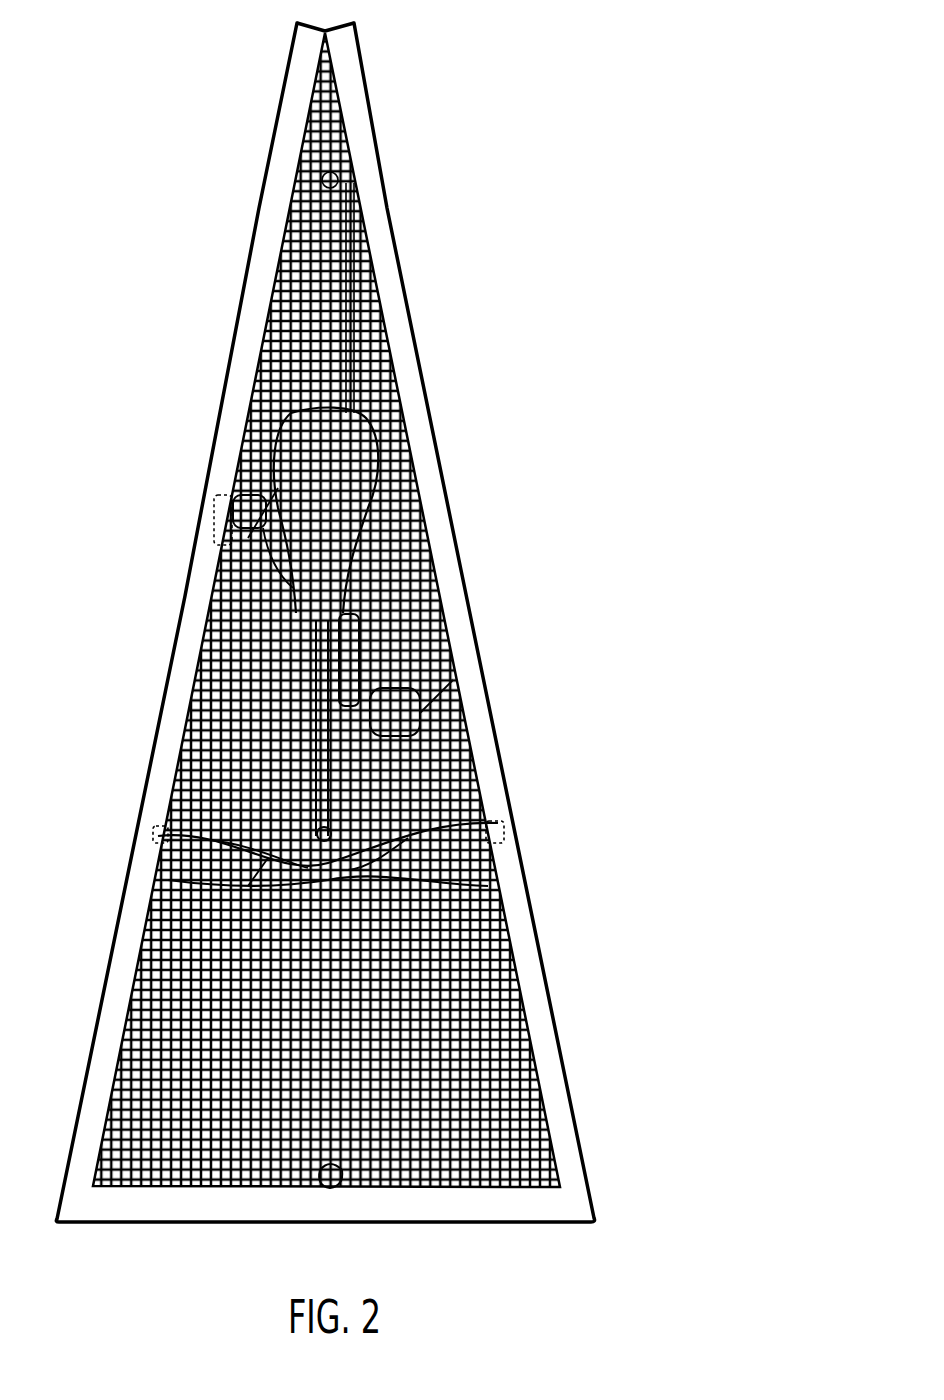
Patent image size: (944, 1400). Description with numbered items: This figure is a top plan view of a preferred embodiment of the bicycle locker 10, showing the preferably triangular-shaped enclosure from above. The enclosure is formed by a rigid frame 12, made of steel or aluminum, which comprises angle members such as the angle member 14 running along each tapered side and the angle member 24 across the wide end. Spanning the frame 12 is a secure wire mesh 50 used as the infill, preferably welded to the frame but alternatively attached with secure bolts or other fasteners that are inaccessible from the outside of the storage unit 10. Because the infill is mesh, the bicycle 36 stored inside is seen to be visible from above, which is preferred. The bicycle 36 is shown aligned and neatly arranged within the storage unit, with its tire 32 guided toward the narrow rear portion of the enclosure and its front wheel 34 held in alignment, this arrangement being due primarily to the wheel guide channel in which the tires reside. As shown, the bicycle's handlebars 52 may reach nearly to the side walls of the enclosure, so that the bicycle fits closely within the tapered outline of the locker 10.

The bicycle locker 10 is at (355, 664).
The rigid frame 12 is at (355, 664).
The angle member 14 is at (182, 588).
The angle member 24 is at (512, 1205).
The tire 32 is at (342, 317).
The front wheel 34 is at (340, 1107).
The bicycle 36 is at (299, 703).
The wire mesh 50 is at (406, 840).
The handlebars 52 is at (485, 815).